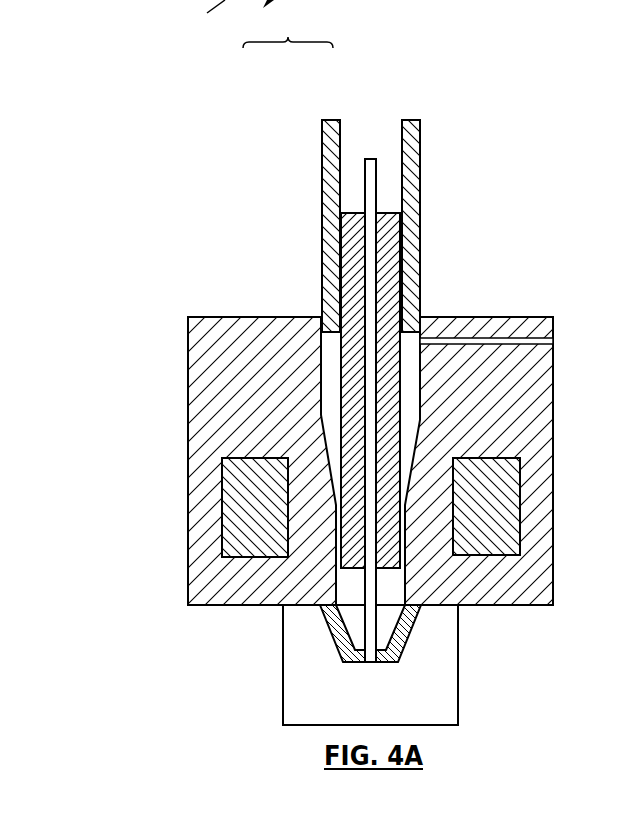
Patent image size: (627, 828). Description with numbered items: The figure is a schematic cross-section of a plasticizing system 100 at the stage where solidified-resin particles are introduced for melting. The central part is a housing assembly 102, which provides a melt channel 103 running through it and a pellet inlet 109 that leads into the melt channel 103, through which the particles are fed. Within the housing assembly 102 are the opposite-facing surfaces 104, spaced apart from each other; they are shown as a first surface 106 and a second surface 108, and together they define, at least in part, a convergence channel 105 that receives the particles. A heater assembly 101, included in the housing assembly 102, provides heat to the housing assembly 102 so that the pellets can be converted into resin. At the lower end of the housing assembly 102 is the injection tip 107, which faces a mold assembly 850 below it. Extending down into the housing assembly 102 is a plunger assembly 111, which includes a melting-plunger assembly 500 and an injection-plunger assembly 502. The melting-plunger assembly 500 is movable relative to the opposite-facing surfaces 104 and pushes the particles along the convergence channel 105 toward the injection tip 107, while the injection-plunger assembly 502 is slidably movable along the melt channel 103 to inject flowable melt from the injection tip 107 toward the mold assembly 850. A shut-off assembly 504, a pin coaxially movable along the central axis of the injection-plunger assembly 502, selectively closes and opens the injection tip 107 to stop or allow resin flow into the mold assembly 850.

The plasticizing system 100 is at (218, 11).
The plunger assembly 111 is at (288, 29).
The melting-plunger assembly 500 is at (333, 120).
The injection-plunger assembly 502 is at (350, 212).
The shut-off assembly 504 is at (371, 158).
The housing assembly 102 is at (238, 317).
The melt channel 103 is at (325, 368).
The pellet inlet 109 is at (488, 342).
The opposite-facing surfaces 104 is at (599, 424).
The convergence channel 105 is at (330, 432).
The first surface 106 is at (324, 449).
The second surface 108 is at (417, 452).
The heater assembly 101 is at (238, 557).
The injection tip 107 is at (348, 595).
The mold assembly 850 is at (283, 678).